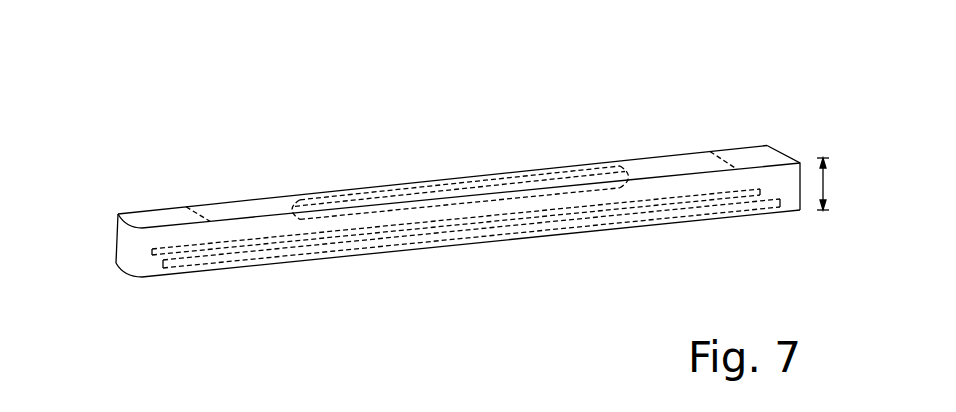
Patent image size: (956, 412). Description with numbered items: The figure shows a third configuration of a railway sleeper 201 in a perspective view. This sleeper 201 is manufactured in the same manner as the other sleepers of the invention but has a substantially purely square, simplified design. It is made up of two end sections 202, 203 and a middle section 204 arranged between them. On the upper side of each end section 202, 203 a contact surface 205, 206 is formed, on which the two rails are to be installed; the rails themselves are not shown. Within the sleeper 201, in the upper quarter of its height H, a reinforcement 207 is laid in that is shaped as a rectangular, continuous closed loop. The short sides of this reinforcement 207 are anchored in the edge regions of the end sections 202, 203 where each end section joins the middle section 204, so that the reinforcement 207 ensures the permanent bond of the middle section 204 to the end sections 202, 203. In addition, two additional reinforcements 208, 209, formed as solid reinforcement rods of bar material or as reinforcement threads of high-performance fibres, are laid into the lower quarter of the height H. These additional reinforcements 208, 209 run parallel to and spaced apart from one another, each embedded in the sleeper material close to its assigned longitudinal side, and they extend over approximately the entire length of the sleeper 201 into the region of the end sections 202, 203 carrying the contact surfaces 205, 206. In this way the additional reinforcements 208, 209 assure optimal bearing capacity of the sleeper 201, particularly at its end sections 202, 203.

The sleeper 201 is at (268, 144).
The end section 202 is at (177, 203).
The end section 203 is at (733, 148).
The middle section 204 is at (480, 180).
The contact surface 205 is at (243, 210).
The contact surface 206 is at (671, 166).
The reinforcement 207 is at (377, 195).
The additional reinforcement 208 is at (201, 253).
The additional reinforcement 209 is at (258, 261).
The height H is at (832, 184).